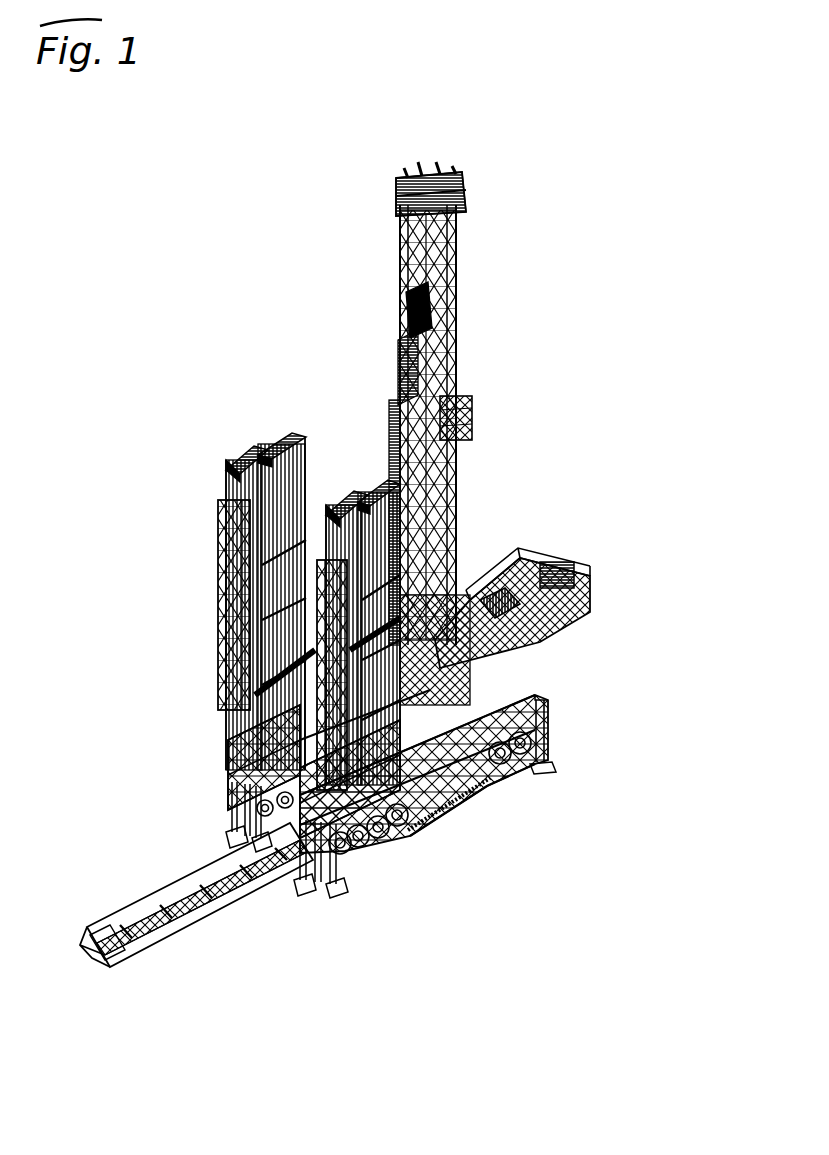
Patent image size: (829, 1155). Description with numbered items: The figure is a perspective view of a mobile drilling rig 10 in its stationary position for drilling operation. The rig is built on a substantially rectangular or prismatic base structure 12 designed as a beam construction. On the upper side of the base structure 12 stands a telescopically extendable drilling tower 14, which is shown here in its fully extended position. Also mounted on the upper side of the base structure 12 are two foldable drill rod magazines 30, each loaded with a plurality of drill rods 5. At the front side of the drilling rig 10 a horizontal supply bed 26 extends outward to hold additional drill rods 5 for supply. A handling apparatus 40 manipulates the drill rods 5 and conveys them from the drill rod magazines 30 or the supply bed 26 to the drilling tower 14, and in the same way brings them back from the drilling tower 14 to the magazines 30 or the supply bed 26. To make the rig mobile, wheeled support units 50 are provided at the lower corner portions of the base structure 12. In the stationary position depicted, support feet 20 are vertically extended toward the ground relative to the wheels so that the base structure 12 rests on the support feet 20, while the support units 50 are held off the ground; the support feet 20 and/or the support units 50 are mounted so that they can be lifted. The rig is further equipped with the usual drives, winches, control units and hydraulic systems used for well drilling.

The drilling rig 10 is at (628, 146).
The drilling tower 14 is at (457, 378).
The drill rods 5 is at (282, 428).
The drill rod magazines 30 is at (218, 624).
The handling apparatus 40 is at (235, 742).
The base structure 12 is at (552, 672).
The support feet 20 is at (535, 739).
The support units 50 is at (510, 758).
The supply bed 26 is at (134, 897).